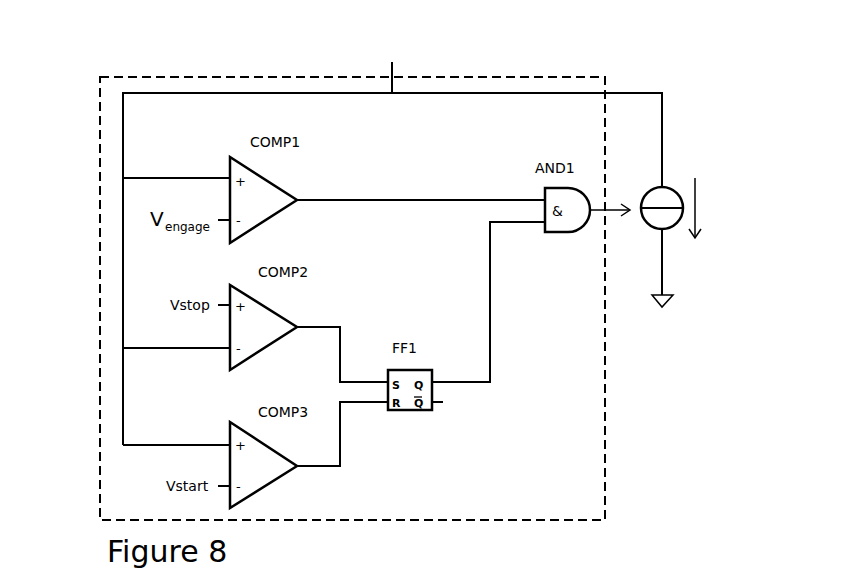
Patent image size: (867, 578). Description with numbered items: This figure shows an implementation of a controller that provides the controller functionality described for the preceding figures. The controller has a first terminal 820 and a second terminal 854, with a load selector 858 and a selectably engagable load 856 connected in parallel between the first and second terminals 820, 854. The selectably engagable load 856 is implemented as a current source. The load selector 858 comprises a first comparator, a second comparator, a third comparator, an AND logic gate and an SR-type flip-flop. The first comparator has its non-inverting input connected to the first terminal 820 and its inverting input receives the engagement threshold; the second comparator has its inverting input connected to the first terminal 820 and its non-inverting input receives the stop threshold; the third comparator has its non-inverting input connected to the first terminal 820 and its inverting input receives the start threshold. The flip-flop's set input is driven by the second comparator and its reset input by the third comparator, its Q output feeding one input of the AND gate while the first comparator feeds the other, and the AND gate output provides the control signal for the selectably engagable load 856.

The first terminal 820 is at (392, 93).
The second terminal 854 is at (675, 297).
The selectably engagable load 856 is at (675, 188).
The load selector 858 is at (100, 280).